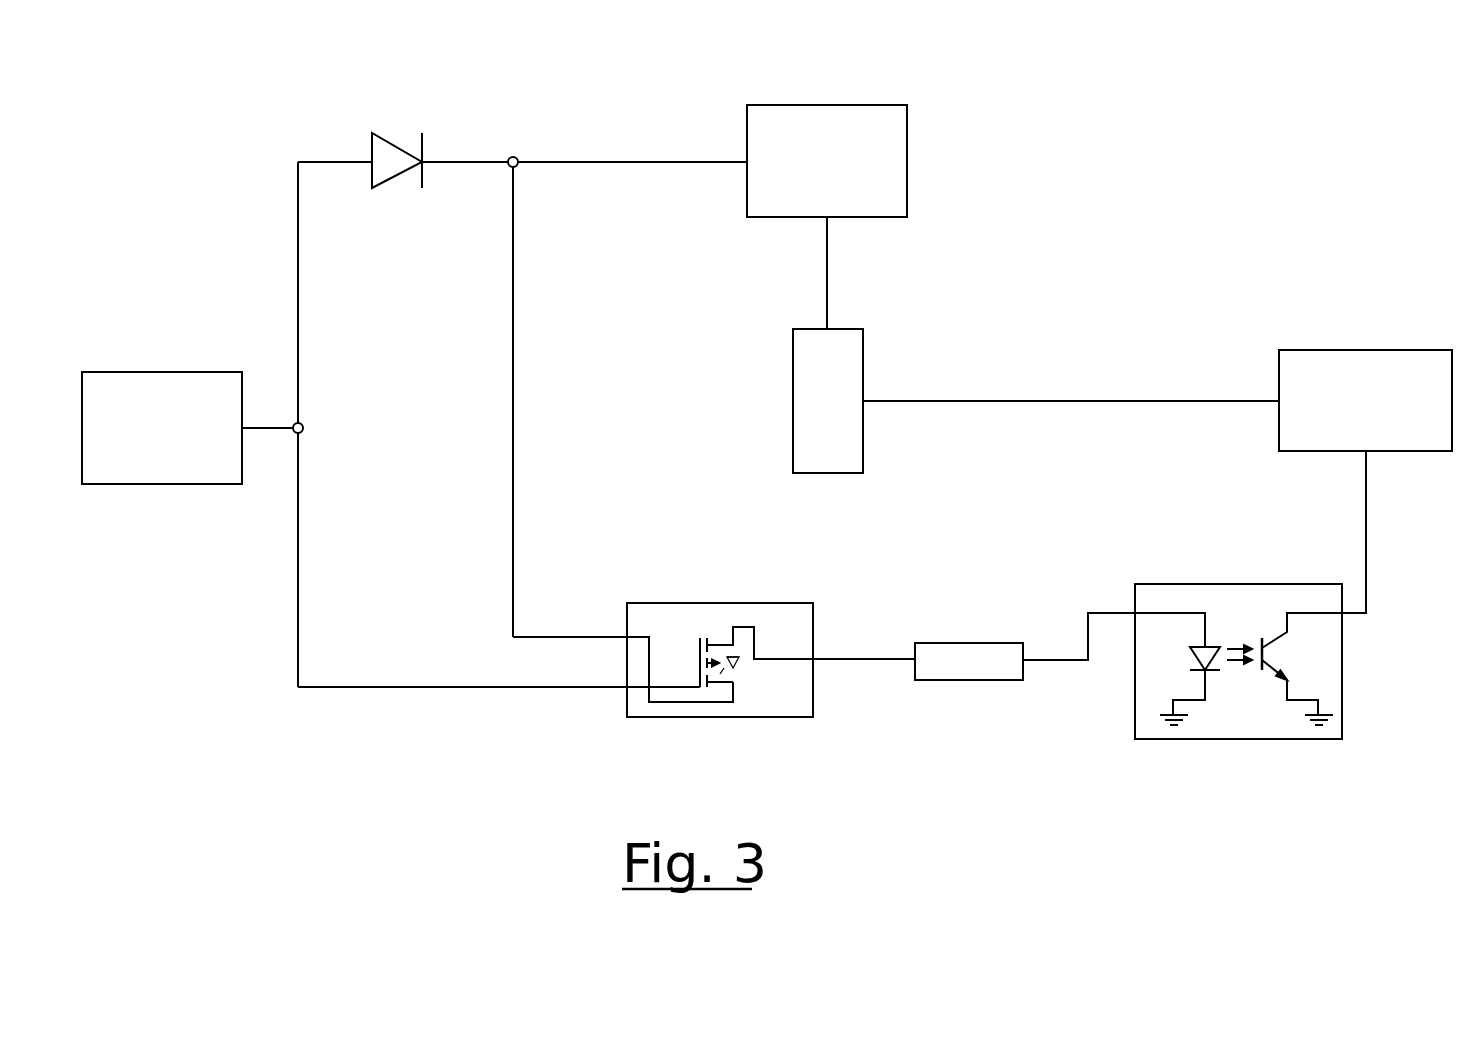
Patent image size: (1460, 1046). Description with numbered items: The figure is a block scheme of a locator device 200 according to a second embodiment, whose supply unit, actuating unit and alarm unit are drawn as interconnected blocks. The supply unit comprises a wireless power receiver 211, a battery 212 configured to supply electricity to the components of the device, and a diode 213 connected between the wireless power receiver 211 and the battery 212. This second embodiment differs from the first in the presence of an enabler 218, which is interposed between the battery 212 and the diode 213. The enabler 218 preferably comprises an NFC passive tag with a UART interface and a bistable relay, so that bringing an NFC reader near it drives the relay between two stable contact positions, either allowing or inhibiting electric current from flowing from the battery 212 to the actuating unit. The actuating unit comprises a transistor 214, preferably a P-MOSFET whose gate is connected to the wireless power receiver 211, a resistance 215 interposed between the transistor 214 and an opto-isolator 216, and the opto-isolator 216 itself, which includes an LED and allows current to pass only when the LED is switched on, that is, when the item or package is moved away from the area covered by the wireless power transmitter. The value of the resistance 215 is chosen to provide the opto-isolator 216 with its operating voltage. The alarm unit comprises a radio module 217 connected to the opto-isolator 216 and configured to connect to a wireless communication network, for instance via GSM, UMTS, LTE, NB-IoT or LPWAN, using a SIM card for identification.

The locator device 200 is at (170, 153).
The wireless power receiver 211 is at (162, 428).
The battery 212 is at (828, 401).
The diode 213 is at (365, 103).
The transistor 214 is at (718, 602).
The resistance 215 is at (969, 661).
The opto-isolator 216 is at (1343, 660).
The radio module 217 is at (1365, 400).
The enabler 218 is at (827, 161).